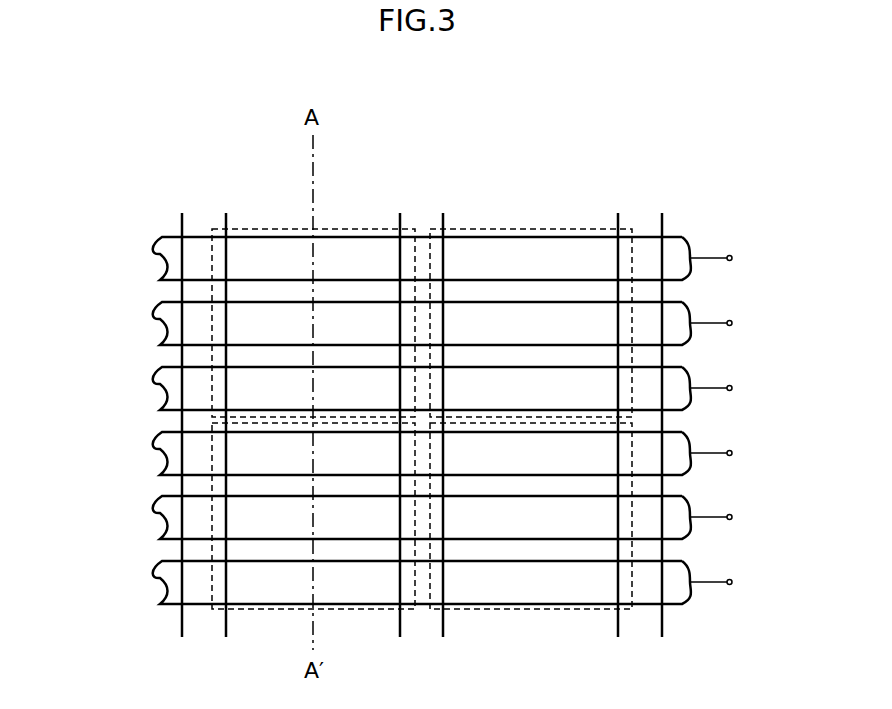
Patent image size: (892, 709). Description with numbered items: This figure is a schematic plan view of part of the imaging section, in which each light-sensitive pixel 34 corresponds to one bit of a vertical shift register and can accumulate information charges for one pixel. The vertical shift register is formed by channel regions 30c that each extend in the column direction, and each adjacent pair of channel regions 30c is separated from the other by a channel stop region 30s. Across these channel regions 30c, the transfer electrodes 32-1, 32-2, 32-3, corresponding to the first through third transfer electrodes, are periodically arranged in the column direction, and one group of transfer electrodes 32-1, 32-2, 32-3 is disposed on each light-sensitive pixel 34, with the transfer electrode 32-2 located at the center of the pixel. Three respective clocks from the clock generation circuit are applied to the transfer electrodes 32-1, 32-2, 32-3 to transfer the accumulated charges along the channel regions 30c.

The channel stop region 30s is at (203, 213).
The channel region 30c is at (279, 213).
The light-sensitive pixel 34 is at (343, 229).
The transfer electrode 32-1 is at (158, 262).
The transfer electrode 32-2 is at (158, 327).
The transfer electrode 32-3 is at (158, 392).